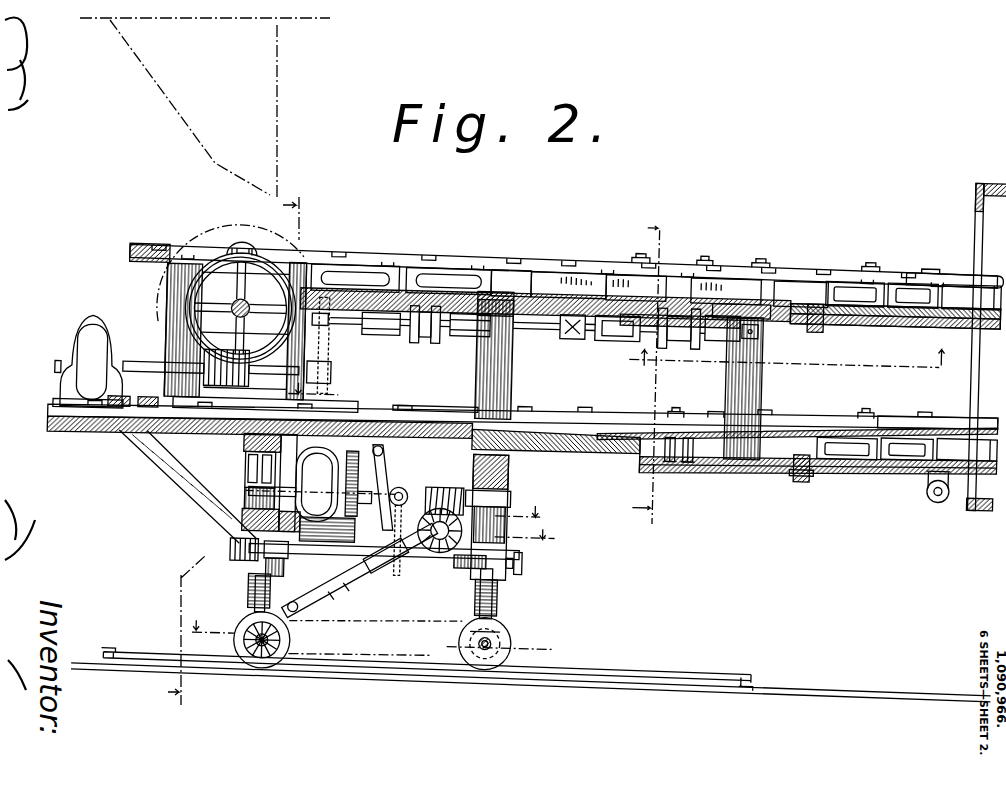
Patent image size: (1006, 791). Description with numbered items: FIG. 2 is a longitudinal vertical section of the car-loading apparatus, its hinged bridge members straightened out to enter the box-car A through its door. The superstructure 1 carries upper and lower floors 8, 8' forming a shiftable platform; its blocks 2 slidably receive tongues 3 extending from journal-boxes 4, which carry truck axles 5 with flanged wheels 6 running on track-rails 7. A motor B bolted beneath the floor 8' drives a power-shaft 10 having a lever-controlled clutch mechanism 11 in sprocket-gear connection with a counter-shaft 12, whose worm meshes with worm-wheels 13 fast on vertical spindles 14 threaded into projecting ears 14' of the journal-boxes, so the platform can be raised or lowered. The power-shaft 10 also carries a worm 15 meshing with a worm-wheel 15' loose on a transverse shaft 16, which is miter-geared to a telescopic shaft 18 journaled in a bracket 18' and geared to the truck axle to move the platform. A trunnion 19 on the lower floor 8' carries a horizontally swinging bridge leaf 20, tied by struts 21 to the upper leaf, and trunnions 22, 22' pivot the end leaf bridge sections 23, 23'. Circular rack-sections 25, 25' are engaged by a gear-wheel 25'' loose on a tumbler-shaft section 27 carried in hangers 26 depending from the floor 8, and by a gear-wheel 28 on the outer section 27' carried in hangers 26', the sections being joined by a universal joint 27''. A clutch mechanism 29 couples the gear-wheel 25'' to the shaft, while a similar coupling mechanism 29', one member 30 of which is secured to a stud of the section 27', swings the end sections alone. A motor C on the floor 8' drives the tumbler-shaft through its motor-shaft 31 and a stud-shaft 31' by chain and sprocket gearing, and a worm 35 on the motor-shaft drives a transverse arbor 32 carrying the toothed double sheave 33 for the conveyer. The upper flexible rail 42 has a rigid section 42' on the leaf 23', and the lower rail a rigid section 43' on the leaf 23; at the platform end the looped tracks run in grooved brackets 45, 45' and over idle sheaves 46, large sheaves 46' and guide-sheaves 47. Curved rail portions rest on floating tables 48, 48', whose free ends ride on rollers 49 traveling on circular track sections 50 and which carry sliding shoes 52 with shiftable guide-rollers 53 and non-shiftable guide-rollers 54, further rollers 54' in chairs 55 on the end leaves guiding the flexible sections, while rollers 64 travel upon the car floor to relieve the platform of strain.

The superstructure 1 is at (235, 540).
The blocks 2 is at (292, 567).
The tongues 3 is at (513, 601).
The journal-boxes 4 is at (506, 640).
The truck axles 5 is at (494, 650).
The flanged wheels 6 is at (302, 650).
The track-rails 7 is at (603, 672).
The upper floor 8 is at (650, 302).
The lower floor 8' is at (260, 438).
The power-shaft 10 is at (442, 532).
The lever-controlled clutch mechanism 11 is at (390, 478).
The counter-shaft 12 is at (326, 560).
The worm-wheels 13 is at (234, 567).
The vertical spindles 14 is at (349, 594).
The projecting ears 14' is at (349, 633).
The worm 15 is at (445, 484).
The worm-wheel 15' is at (409, 521).
The transverse shaft 16 is at (439, 530).
The telescopic shaft 18 is at (359, 570).
The bracket 18' is at (311, 619).
The trunnion 19 is at (588, 444).
The leaf of sectional bridge 20 is at (642, 462).
The struts 21 is at (760, 372).
The trunnion 22 is at (801, 483).
The trunnion 22' is at (824, 328).
The end leaf bridge section 23 is at (818, 482).
The end leaf bridge section 23' is at (895, 323).
The circular rack-section 25 is at (511, 283).
The circular rack-section 25' is at (801, 291).
The gear-wheel 25'' is at (513, 355).
The hangers 26 is at (576, 341).
The hangers 26' is at (615, 346).
The tumbler-shaft section 27 is at (389, 348).
The tumbler-shaft section 27' is at (572, 343).
The universal joint 27'' is at (610, 349).
The gear-wheel 28 is at (758, 328).
The clutch mechanism 29 is at (425, 333).
The coupling mechanism 29' is at (679, 343).
The member of coupling mechanism 30 is at (720, 336).
The motor-shaft 31 is at (211, 353).
The stud-shaft 31' is at (315, 345).
The transverse arbor 32 is at (232, 304).
The toothed double sheave 33 is at (242, 225).
The worm 35 is at (217, 418).
The flexible rail 42 is at (567, 251).
The rigid section 42' is at (952, 260).
The rigid section 43' is at (938, 413).
The brackets 45 is at (356, 256).
The brackets 45' is at (436, 396).
The idle sheaves 46 is at (287, 306).
The large sheaves 46' is at (165, 304).
The guide-sheaves 47 is at (205, 380).
The upper floating table 48 is at (569, 263).
The lower floating table 48' is at (794, 418).
The rollers 49 is at (670, 458).
The circular track sections 50 is at (692, 458).
The shoes 52 is at (640, 418).
The guide-rollers 53 is at (682, 410).
The non-shiftable guide-rollers 54 is at (737, 322).
The rollers 54' is at (892, 325).
The chairs 55 is at (850, 296).
The rollers 64 is at (936, 491).
The box-car A is at (966, 217).
The motor B is at (320, 494).
The motor C is at (89, 361).